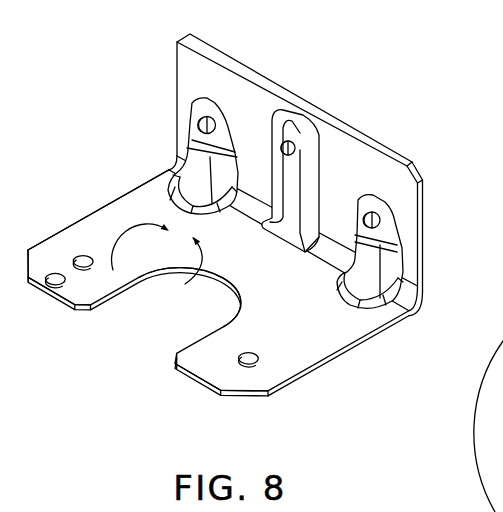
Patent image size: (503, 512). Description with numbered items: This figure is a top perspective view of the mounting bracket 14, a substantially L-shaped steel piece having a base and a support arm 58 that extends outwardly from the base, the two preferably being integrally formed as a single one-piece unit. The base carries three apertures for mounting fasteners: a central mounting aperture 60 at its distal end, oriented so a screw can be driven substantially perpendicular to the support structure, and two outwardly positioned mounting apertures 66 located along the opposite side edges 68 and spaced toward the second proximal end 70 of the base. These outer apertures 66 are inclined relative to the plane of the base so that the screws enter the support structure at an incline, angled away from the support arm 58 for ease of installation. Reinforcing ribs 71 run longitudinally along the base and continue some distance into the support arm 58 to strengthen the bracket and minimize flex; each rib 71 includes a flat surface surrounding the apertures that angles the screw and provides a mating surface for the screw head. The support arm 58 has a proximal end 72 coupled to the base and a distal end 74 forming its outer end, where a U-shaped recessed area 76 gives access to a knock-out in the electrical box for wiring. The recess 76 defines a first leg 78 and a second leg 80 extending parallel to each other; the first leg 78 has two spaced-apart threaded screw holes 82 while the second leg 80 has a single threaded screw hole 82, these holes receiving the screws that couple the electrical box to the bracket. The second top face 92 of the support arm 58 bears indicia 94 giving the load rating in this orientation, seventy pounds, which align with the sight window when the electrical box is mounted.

The mounting bracket 14 is at (249, 248).
The support arm 58 is at (206, 303).
The central mounting aperture 60 is at (319, 112).
The outwardly positioned mounting apertures 66 is at (335, 131).
The side edges 68 is at (298, 160).
The second proximal end 70 is at (440, 312).
The reinforcing ribs 71 is at (305, 203).
The proximal end 72 is at (257, 259).
The distal end 74 is at (124, 366).
The recessed area 76 is at (202, 299).
The first leg 78 is at (263, 429).
The second leg 80 is at (80, 346).
The threaded screw holes 82 is at (143, 316).
The second top face 92 is at (98, 201).
The indicia 94 is at (157, 291).